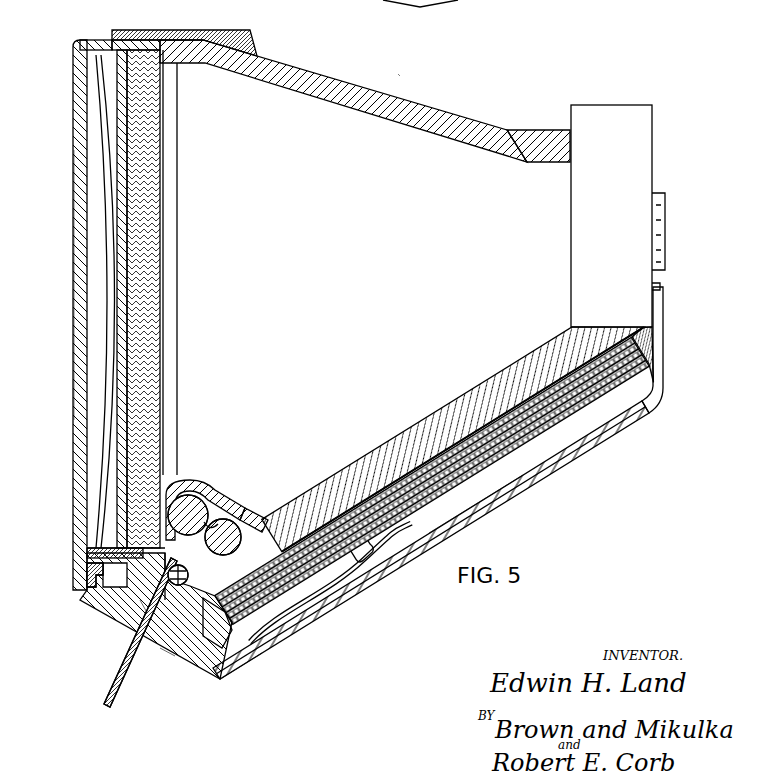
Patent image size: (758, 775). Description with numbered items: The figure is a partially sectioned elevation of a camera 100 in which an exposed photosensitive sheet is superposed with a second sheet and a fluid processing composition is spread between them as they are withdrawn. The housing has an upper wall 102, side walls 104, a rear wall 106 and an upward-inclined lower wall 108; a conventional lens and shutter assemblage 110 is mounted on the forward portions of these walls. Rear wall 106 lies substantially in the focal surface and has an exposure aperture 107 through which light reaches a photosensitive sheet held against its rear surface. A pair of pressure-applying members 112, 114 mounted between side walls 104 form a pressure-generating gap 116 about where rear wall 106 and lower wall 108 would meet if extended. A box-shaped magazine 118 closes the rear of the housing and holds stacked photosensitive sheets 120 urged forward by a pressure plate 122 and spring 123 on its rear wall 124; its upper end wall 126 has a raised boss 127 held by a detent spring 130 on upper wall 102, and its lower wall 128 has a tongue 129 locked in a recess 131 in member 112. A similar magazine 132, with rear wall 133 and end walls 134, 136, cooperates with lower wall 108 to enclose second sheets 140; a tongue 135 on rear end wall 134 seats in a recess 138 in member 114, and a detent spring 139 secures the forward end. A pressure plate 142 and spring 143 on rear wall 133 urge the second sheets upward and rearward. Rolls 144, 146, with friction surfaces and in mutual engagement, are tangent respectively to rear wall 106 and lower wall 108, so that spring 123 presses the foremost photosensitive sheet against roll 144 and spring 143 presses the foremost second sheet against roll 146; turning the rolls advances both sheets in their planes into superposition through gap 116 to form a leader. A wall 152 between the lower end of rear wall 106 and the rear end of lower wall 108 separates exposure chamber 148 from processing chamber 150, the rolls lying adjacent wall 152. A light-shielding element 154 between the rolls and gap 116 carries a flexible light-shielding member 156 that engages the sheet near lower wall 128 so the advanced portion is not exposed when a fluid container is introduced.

The camera 100 is at (395, 78).
The upper wall 102 is at (322, 78).
The side walls 104 is at (395, 268).
The rear wall 106 is at (178, 260).
The exposure aperture 107 is at (175, 233).
The lower wall 108 is at (427, 427).
The lens and shutter assemblage 110 is at (650, 145).
The pressure-applying member 112 is at (120, 613).
The pressure-applying member 114 is at (178, 690).
The pressure-generating gap 116 is at (128, 650).
The magazine 118 is at (75, 288).
The photosensitive sheets 120 is at (148, 162).
The pressure plate 122 is at (122, 90).
The spring 123 is at (100, 182).
The rear wall 124 is at (77, 250).
The upper end wall 126 is at (90, 40).
The raised boss 127 is at (133, 30).
The lower wall 128 is at (103, 540).
The tongue 129 is at (93, 572).
The detent spring 130 is at (200, 30).
The recess 131 is at (103, 623).
The magazine 132 is at (543, 487).
The rear wall 133 is at (490, 507).
The rear end wall 134 is at (263, 653).
The tongue 135 is at (235, 655).
The end wall 136 is at (640, 355).
The recess 138 is at (210, 677).
The detent spring 139 is at (663, 395).
The second sheets 140 is at (535, 395).
The pressure plate 142 is at (350, 537).
The spring 143 is at (343, 607).
The roll 144 is at (188, 478).
The roll 146 is at (255, 510).
The exposure chamber 148 is at (430, 103).
The processing chamber 150 is at (165, 660).
The wall 152 is at (192, 500).
The light-shielding element 154 is at (228, 522).
The flexible light-shielding member 156 is at (224, 518).